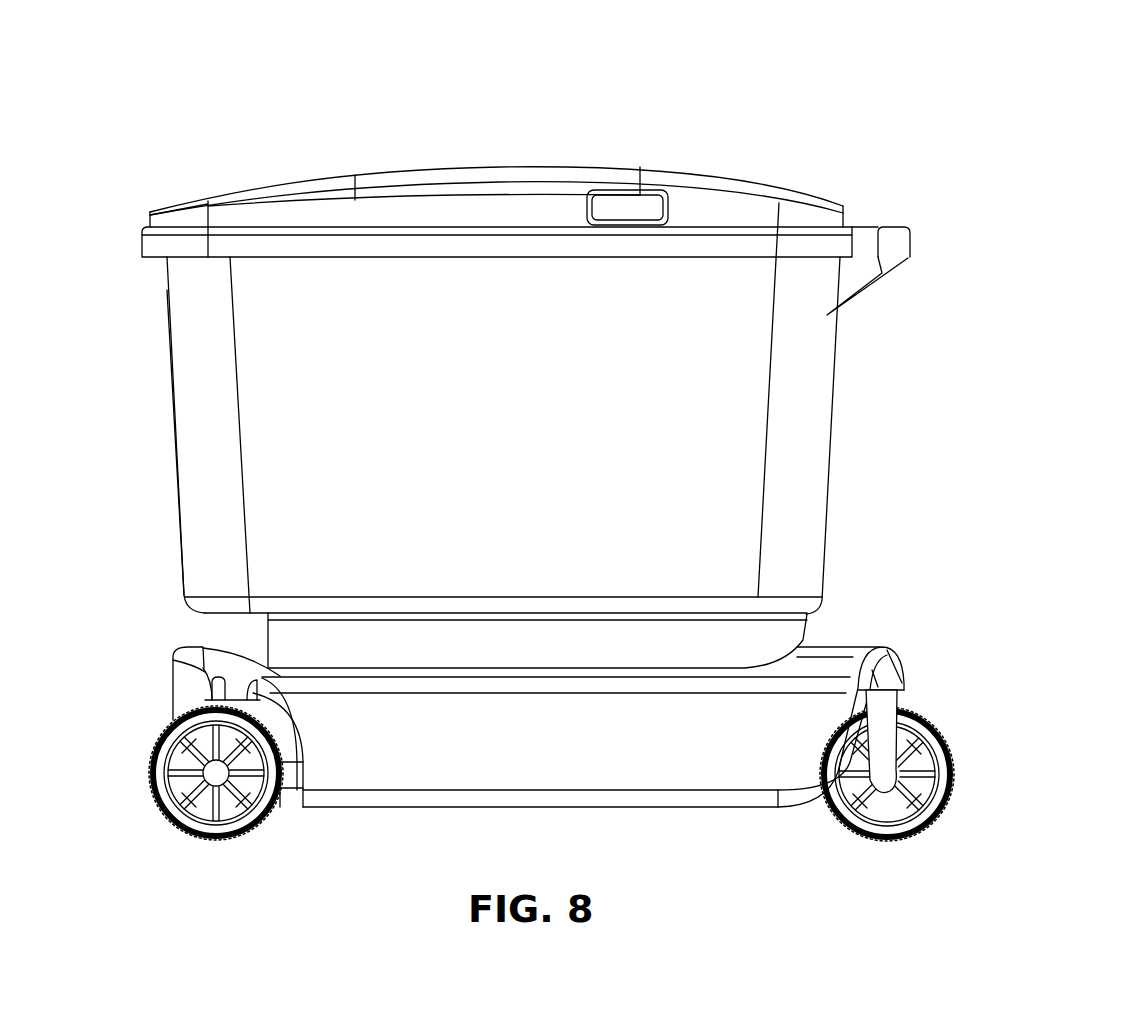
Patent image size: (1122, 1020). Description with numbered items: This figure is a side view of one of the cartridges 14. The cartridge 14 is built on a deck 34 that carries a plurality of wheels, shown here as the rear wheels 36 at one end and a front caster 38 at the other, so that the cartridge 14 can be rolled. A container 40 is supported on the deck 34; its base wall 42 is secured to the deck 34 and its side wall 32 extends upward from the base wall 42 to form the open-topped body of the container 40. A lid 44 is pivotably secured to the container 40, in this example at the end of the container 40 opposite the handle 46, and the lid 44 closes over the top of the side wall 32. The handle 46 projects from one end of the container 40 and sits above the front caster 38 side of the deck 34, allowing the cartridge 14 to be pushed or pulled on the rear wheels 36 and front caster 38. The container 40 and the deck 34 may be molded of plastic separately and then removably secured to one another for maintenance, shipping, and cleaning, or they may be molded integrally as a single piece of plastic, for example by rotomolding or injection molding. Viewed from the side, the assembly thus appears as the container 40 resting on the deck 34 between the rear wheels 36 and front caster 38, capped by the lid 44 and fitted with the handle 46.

The cartridge 14 is at (993, 128).
The side wall 32 is at (830, 497).
The deck 34 is at (872, 647).
The rear wheels 36 is at (158, 737).
The front caster 38 is at (937, 732).
The container 40 is at (836, 410).
The base wall 42 is at (808, 638).
The lid 44 is at (780, 187).
The handle 46 is at (890, 228).